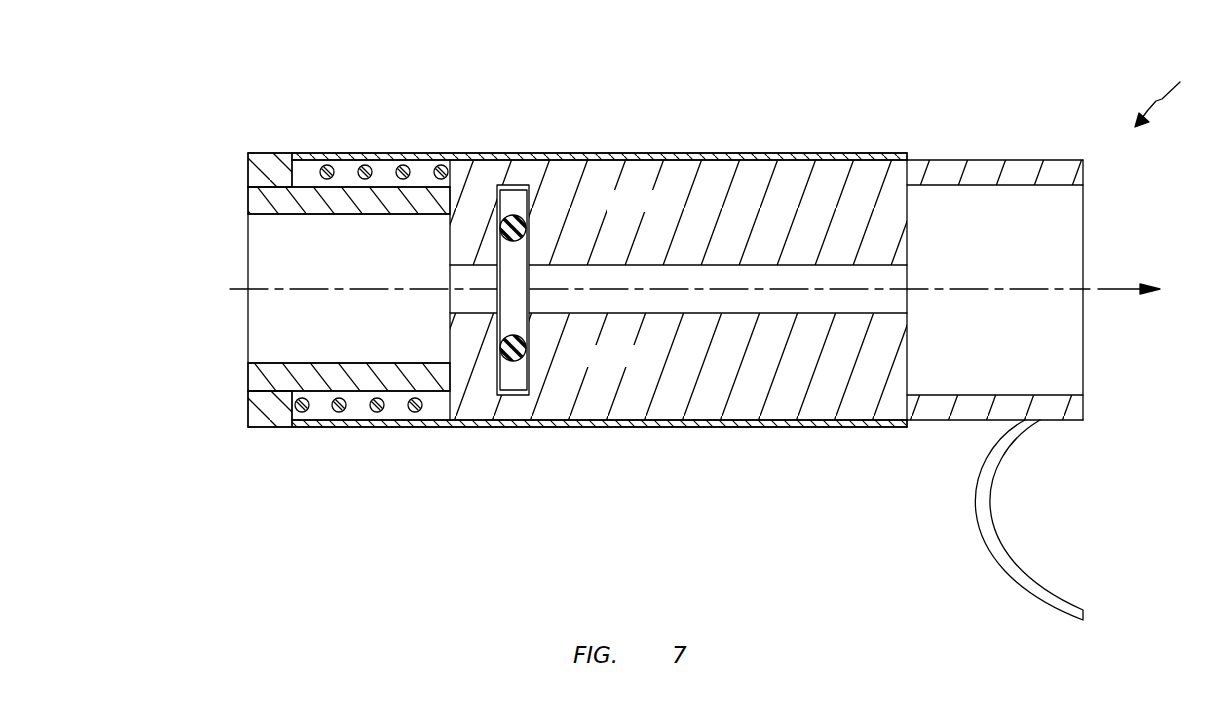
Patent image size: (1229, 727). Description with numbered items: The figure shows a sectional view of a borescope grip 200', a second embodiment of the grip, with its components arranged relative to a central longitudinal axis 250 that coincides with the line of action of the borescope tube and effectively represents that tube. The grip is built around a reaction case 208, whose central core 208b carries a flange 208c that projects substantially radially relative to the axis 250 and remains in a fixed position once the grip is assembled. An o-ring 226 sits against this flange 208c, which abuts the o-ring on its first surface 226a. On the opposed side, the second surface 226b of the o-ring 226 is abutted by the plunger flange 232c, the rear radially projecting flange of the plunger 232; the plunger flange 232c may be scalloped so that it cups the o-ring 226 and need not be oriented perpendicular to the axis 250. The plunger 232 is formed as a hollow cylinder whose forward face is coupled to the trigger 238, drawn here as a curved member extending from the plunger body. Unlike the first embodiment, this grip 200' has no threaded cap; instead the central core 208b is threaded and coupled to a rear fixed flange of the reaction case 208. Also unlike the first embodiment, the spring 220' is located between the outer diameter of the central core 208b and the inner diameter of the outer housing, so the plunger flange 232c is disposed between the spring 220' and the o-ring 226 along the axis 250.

The borescope grip 200' is at (1171, 92).
The reaction case 208 is at (432, 153).
The central core 208b is at (258, 374).
The flange face 208c is at (533, 200).
The spring 220' is at (371, 289).
The o-ring 226 is at (523, 195).
The first surface of the o-ring 226a is at (529, 292).
The second surface of the o-ring 226b is at (500, 291).
The plunger 232 is at (987, 172).
The plunger flange 232c is at (472, 338).
The trigger 238 is at (983, 510).
The central longitudinal axis 250 is at (1118, 287).